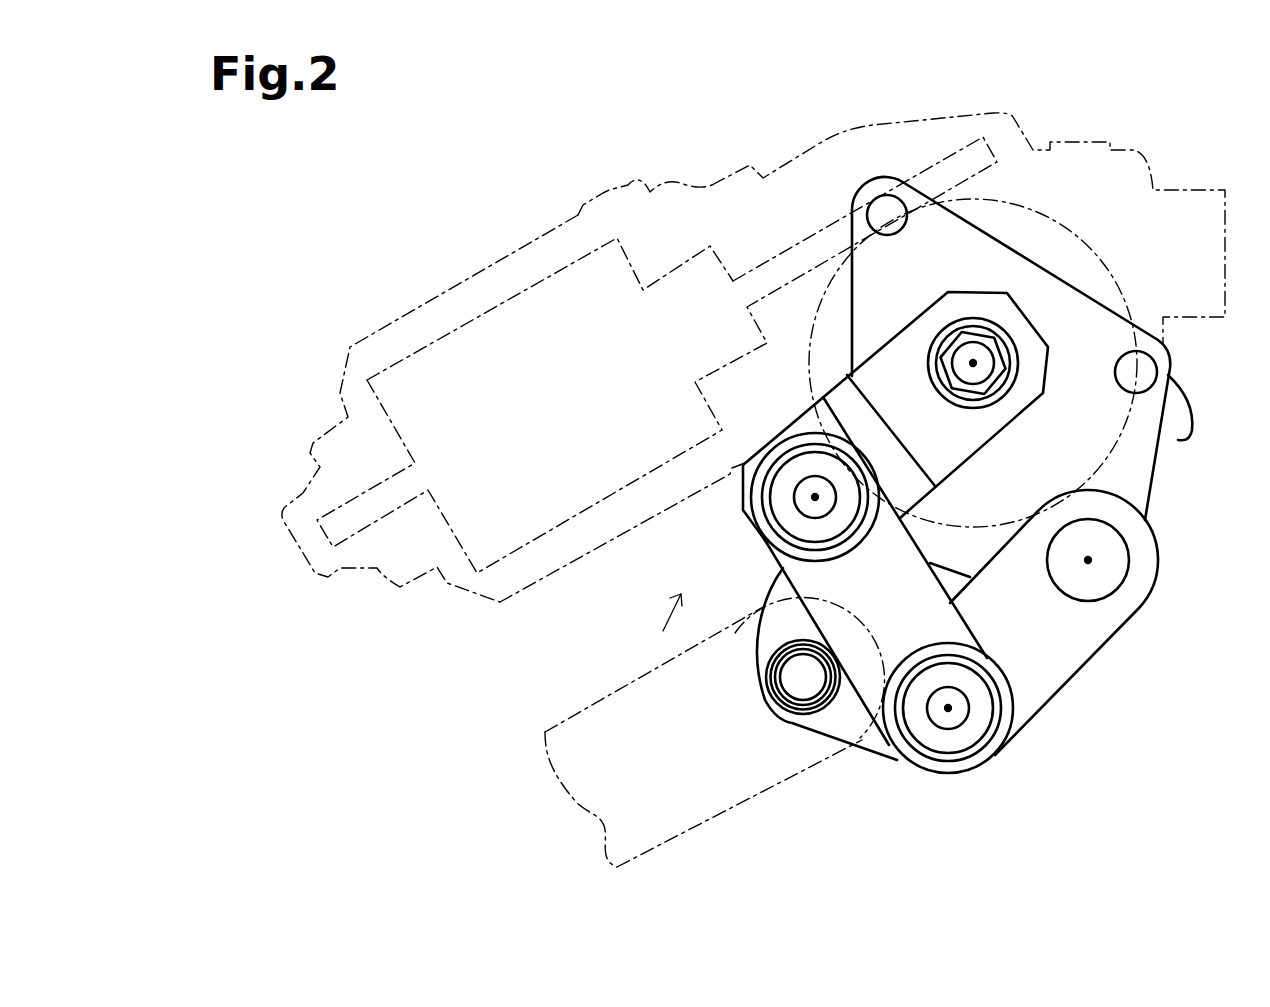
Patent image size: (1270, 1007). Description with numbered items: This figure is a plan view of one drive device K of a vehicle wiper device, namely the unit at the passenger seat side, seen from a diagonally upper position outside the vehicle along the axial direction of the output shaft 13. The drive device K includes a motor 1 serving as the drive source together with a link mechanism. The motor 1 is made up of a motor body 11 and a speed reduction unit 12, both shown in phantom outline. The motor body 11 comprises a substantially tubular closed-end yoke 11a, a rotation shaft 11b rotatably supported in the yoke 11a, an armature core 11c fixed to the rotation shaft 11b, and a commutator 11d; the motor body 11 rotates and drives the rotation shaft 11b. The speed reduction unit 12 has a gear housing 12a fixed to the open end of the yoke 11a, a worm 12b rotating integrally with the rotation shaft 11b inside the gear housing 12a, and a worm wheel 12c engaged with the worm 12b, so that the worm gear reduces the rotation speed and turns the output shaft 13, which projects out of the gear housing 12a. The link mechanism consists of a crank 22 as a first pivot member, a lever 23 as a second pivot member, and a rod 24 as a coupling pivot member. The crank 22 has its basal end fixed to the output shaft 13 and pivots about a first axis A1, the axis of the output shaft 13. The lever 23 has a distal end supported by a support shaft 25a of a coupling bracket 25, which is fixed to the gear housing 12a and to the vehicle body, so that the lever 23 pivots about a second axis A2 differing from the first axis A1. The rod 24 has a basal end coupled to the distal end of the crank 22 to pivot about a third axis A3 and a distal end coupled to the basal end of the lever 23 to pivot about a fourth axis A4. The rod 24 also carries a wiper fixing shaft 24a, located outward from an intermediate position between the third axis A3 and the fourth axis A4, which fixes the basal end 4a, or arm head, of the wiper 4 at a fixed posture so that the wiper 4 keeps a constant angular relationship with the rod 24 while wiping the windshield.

The motor 1 is at (750, 104).
The motor body 11 is at (658, 172).
The yoke 11a is at (420, 306).
The rotation shaft 11b is at (358, 530).
The armature core 11c is at (513, 297).
The commutator 11d is at (660, 270).
The speed reduction unit 12 is at (778, 157).
The gear housing 12a is at (868, 134).
The worm 12b is at (790, 247).
The worm wheel 12c is at (1010, 201).
The output shaft 13 is at (985, 353).
The crank 22 is at (878, 362).
The lever 23 is at (1067, 670).
The rod 24 is at (803, 577).
The wiper fixing shaft 24a is at (797, 683).
The coupling bracket 25 is at (1030, 270).
The support shaft 25a is at (1103, 533).
The wiper 4 is at (578, 710).
The basal end (arm head) 4a is at (833, 750).
The first axis A1 is at (973, 363).
The second axis A2 is at (1088, 560).
The third axis A3 is at (815, 497).
The fourth axis A4 is at (948, 708).
The drive device K is at (666, 627).